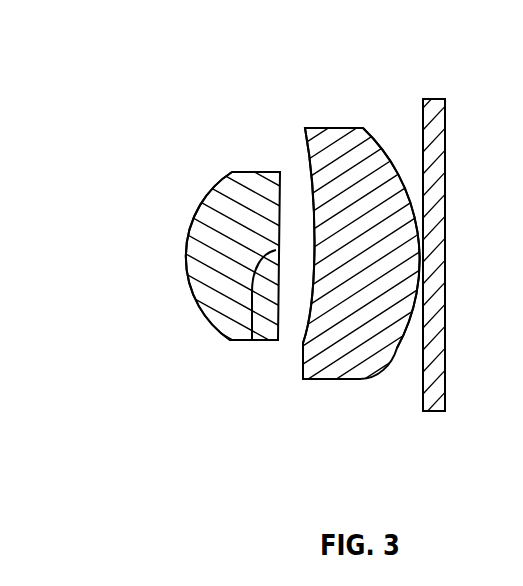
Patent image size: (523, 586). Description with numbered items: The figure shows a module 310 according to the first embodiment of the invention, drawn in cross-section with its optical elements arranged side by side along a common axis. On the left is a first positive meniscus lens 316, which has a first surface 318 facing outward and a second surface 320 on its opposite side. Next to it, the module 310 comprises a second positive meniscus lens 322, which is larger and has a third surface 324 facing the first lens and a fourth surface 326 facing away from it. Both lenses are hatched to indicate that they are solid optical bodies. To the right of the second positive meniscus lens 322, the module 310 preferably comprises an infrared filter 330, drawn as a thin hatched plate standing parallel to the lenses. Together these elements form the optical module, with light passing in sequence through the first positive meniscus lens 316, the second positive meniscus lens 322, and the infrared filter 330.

The module 310 is at (133, 89).
The first positive meniscus lens 316 is at (220, 250).
The first surface 318 is at (213, 188).
The second surface 320 is at (252, 340).
The second positive meniscus lens 322 is at (352, 250).
The third surface 324 is at (315, 220).
The fourth surface 326 is at (398, 348).
The infrared filter 330 is at (435, 102).